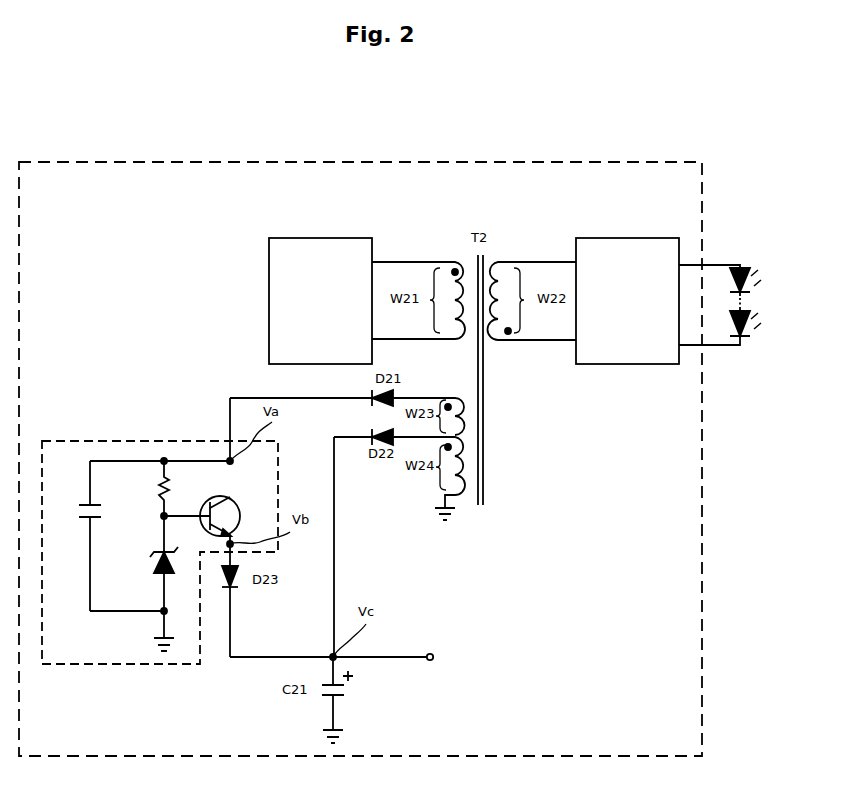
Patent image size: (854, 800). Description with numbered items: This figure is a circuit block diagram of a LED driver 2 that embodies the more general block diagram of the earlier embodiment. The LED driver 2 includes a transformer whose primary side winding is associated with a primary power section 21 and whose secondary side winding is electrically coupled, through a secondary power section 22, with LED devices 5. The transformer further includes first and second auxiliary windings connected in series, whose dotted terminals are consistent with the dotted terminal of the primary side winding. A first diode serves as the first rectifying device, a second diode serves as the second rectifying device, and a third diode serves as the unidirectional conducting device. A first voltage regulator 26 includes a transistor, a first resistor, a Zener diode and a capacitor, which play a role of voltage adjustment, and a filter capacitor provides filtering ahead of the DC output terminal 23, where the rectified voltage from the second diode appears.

The LED driver 2 is at (548, 162).
The LED devices 5 is at (748, 268).
The primary power section 21 is at (312, 238).
The secondary power section 22 is at (608, 238).
The DC output terminal 23 is at (433, 654).
The first voltage regulator 26 is at (95, 441).